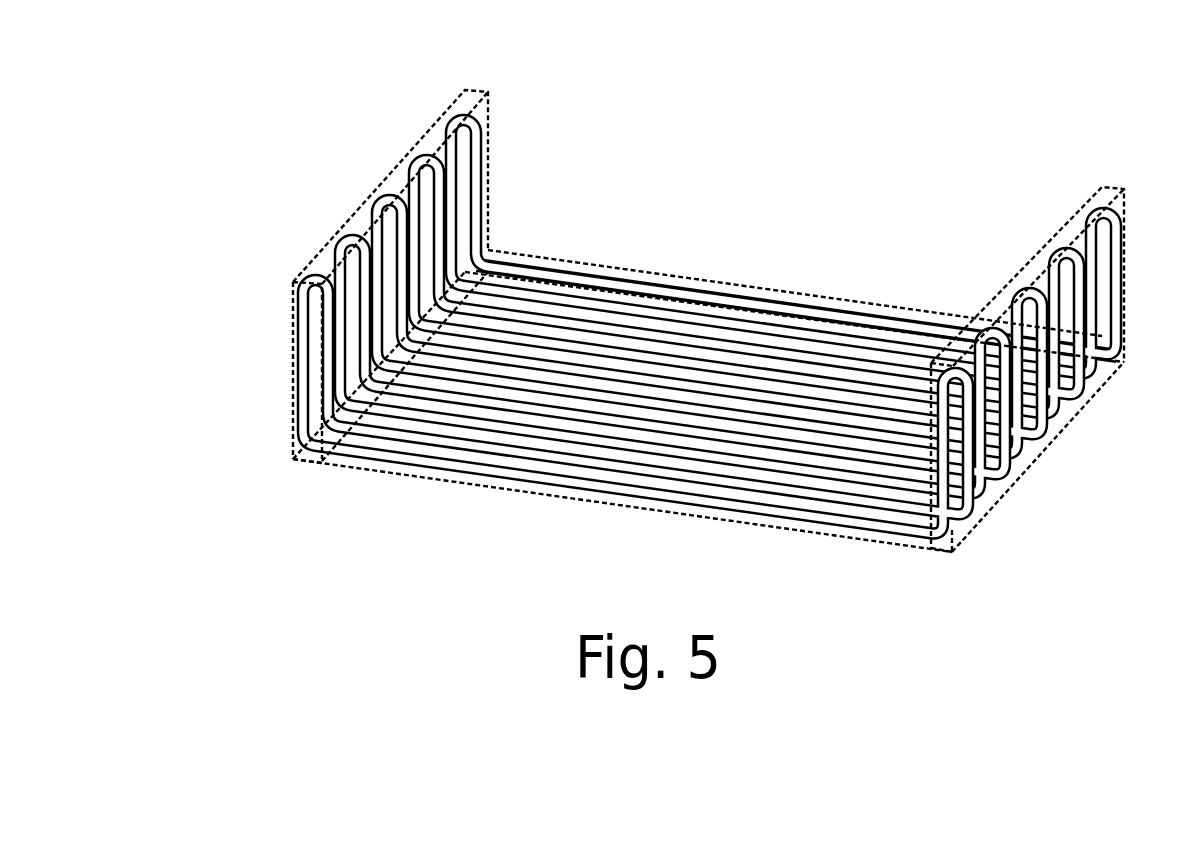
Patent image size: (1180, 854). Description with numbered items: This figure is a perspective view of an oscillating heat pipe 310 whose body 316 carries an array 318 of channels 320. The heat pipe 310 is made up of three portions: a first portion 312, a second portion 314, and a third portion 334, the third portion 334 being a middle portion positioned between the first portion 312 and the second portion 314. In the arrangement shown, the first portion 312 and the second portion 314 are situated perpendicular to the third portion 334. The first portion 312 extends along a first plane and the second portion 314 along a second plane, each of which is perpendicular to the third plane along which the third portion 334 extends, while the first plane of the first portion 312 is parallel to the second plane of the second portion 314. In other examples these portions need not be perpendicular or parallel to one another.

The heat pipe 310 is at (701, 311).
The first portion 312 is at (388, 170).
The second portion 314 is at (1110, 180).
The body 316 is at (460, 490).
The array 318 is at (752, 365).
The channels 320 is at (563, 284).
The third portion 334 is at (672, 272).